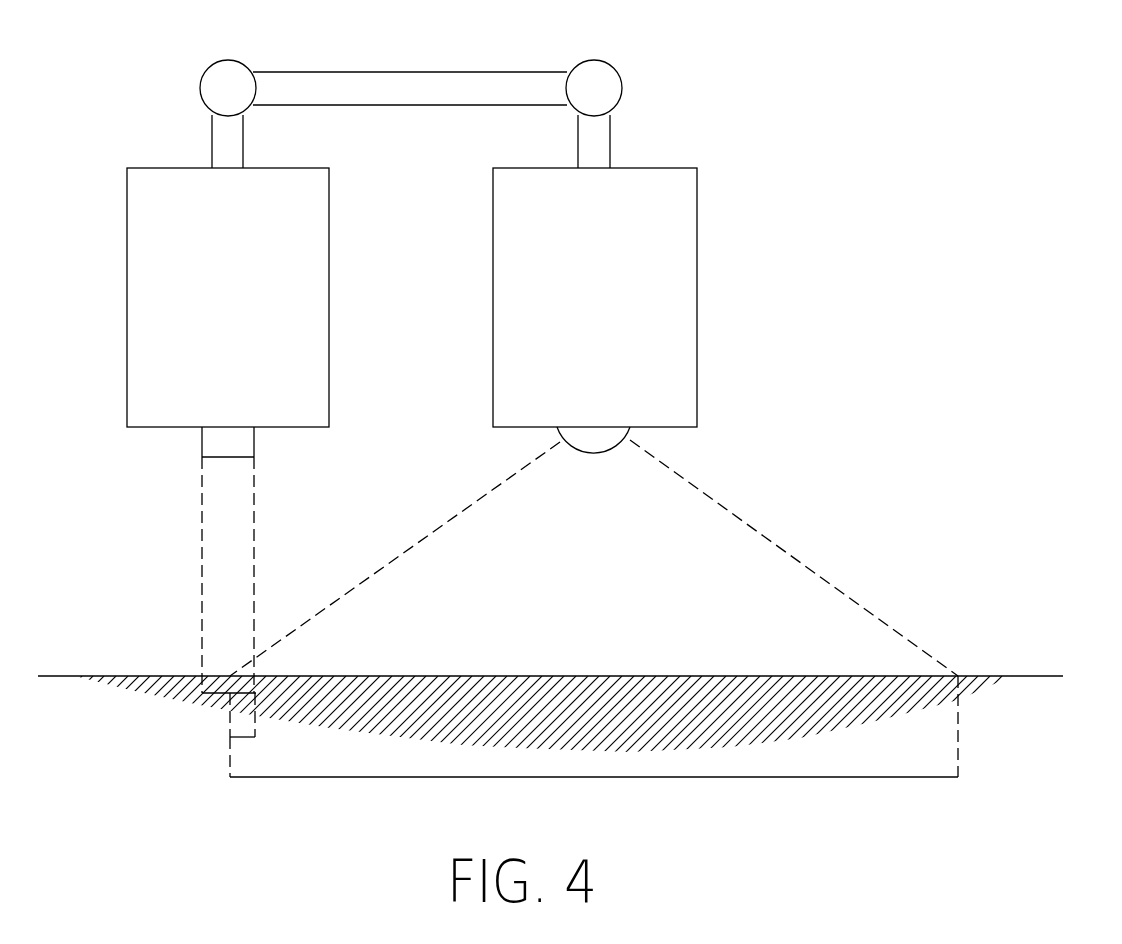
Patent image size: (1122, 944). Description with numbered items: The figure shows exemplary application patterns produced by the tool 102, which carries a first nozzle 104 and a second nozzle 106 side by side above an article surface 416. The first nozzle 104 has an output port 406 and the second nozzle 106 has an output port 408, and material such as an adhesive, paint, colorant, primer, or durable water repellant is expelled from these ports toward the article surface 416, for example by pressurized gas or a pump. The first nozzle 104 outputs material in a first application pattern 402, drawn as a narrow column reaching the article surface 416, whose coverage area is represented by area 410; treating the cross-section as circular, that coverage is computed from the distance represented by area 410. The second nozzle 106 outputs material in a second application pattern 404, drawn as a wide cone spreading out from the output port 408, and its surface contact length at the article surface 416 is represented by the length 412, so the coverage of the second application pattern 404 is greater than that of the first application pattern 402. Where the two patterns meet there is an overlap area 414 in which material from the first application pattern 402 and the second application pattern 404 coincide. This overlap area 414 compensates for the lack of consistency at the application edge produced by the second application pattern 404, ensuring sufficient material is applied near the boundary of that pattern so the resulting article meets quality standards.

The tool 102 is at (411, 66).
The first nozzle 104 is at (167, 293).
The second nozzle 106 is at (657, 293).
The first application pattern 402 is at (201, 550).
The second application pattern 404 is at (793, 556).
The output port 406 is at (249, 441).
The output port 408 is at (598, 444).
The area 410 is at (222, 698).
The surface contact length 412 is at (595, 778).
The overlap area 414 is at (240, 740).
The article surface 416 is at (997, 670).